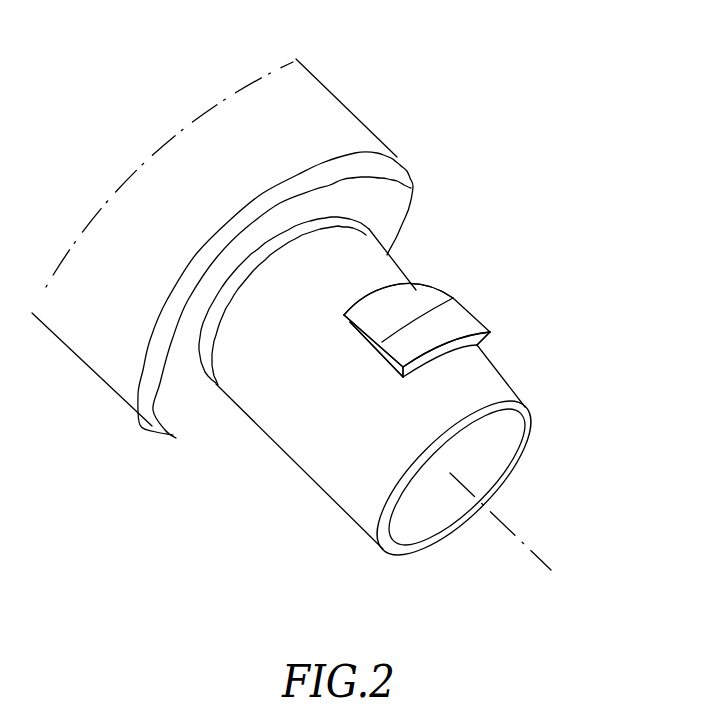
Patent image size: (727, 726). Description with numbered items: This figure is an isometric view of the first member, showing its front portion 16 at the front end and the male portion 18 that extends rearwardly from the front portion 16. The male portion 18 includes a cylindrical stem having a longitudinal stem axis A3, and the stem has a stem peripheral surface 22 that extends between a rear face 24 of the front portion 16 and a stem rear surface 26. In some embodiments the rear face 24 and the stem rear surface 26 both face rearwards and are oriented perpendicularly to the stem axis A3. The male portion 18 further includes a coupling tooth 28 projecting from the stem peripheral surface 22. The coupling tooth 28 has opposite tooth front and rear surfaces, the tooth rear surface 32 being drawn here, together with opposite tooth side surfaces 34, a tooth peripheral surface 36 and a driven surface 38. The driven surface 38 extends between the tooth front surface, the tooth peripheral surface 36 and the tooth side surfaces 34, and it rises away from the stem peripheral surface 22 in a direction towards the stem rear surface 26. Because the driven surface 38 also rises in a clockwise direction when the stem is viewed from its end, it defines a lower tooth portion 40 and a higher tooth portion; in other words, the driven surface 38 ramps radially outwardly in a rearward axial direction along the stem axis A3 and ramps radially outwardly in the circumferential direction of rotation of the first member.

The front portion 16 is at (360, 74).
The male portion 18 is at (515, 220).
The stem peripheral surface 22 is at (370, 453).
The rear face 24 is at (218, 408).
The stem rear surface 26 is at (487, 453).
The coupling tooth 28 is at (478, 302).
The tooth rear surface 32 is at (479, 348).
The tooth side surfaces 34 is at (313, 394).
The tooth peripheral surface 36 is at (490, 332).
The driven surface 38 is at (409, 282).
The lower tooth portion 40 is at (173, 400).
The stem axis A3 is at (551, 565).